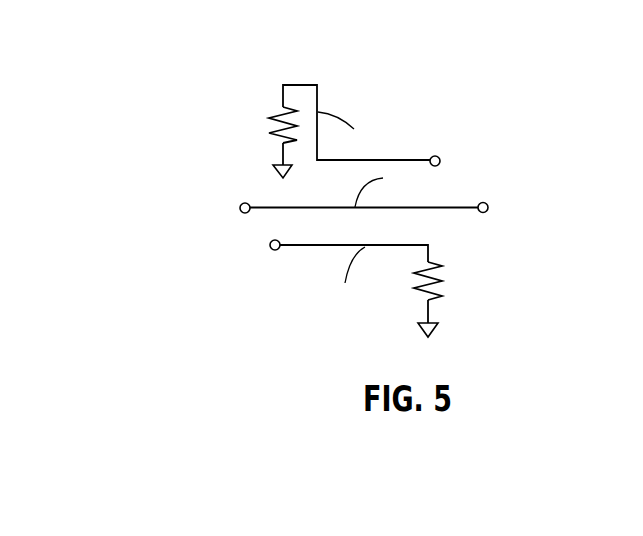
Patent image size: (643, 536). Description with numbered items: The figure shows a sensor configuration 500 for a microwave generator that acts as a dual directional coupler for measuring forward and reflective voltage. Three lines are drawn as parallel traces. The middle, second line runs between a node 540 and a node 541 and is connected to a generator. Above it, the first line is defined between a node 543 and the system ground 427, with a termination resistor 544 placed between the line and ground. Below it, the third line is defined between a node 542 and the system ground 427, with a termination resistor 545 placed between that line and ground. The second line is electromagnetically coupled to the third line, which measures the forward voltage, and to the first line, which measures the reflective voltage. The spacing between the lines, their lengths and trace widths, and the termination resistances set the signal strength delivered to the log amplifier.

The sensor configuration 500 is at (540, 97).
The node 540 is at (245, 213).
The node 541 is at (483, 202).
The node 542 is at (275, 250).
The node 543 is at (435, 156).
The termination resistor 544 is at (268, 128).
The termination resistor 545 is at (445, 280).
The system ground 427 is at (271, 172).